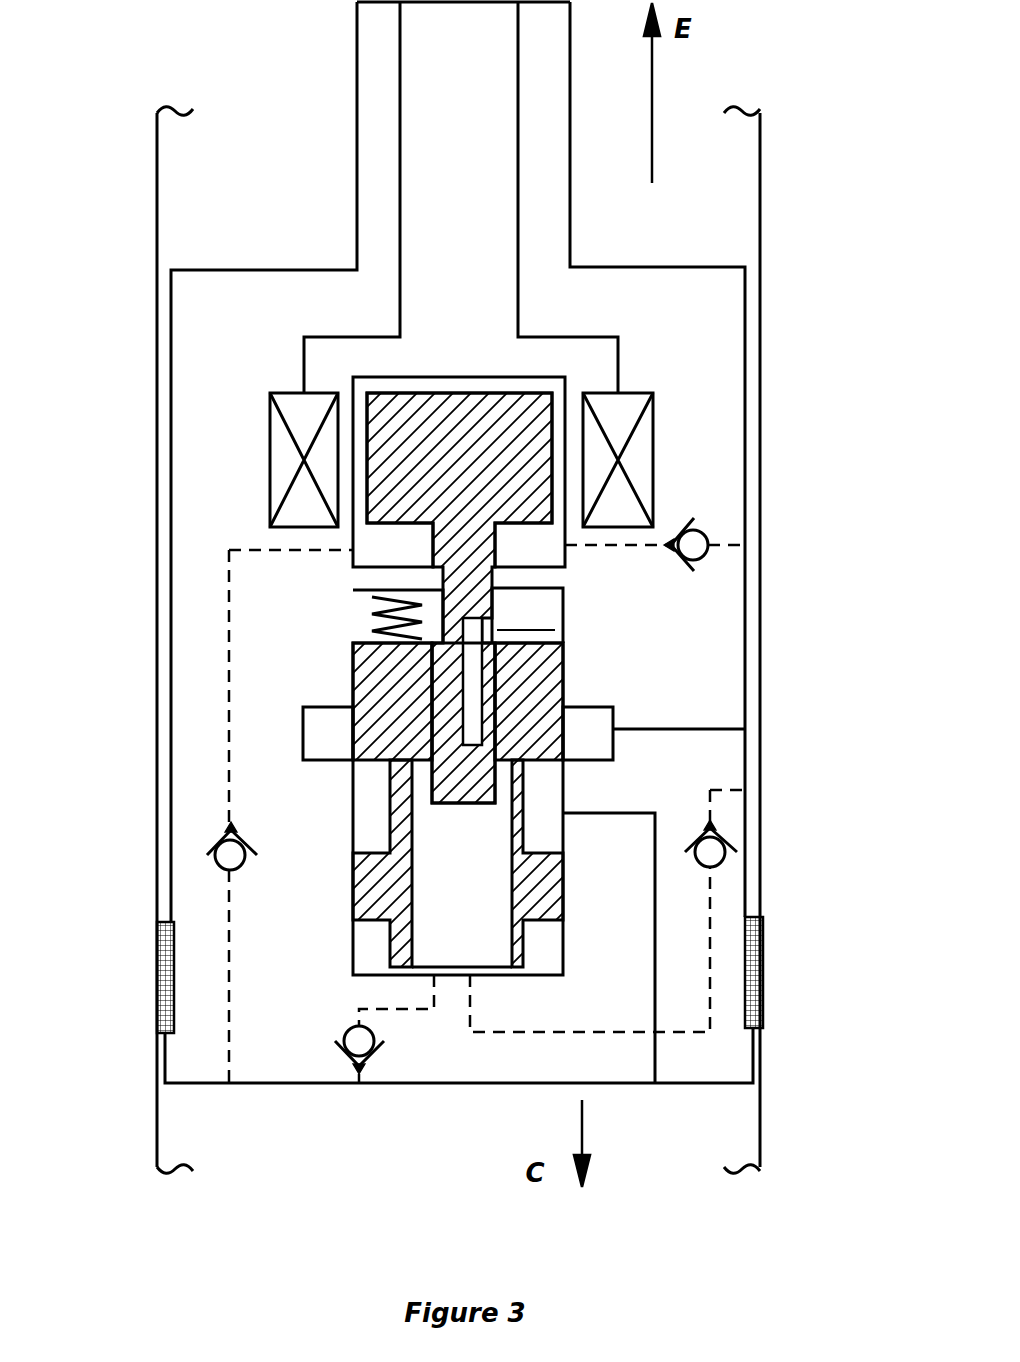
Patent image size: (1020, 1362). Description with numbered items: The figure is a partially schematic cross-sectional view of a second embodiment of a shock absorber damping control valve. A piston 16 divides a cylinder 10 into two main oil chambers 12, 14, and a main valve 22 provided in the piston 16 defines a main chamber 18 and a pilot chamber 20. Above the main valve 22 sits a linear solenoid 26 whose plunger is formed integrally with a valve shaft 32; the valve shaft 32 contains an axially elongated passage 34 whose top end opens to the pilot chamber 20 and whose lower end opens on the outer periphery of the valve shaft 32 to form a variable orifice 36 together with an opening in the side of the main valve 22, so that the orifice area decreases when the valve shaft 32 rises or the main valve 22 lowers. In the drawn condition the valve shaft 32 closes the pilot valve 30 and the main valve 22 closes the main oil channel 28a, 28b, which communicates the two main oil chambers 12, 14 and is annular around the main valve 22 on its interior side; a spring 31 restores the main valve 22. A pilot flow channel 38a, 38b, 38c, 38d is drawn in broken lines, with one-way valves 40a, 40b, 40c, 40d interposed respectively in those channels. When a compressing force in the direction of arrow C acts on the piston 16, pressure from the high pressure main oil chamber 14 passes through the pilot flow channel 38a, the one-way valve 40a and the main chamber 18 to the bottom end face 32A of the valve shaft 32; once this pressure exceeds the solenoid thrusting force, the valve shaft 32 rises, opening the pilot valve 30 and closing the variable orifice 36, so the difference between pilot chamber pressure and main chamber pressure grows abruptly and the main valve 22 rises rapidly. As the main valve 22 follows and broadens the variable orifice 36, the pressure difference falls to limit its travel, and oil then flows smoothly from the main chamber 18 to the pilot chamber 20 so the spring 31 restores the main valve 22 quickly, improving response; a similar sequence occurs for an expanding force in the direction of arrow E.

The cylinder 10 is at (758, 198).
The main oil chamber 12 is at (243, 191).
The main oil chamber 14 is at (265, 1225).
The piston 16 is at (745, 291).
The main chamber 18 is at (497, 944).
The pilot chamber 20 is at (545, 612).
The main valve 22 is at (520, 975).
The linear solenoid 26 is at (487, 378).
The main oil channel 28a is at (678, 730).
The main oil channel 28b is at (655, 1052).
The pilot valve 30 is at (420, 559).
The spring 31 is at (355, 622).
The valve shaft 32 is at (430, 765).
The bottom end face 32A is at (455, 805).
The passage 34 is at (482, 727).
The variable orifice 36 is at (490, 757).
The pilot flow channel 38a is at (412, 1010).
The pilot flow channel 38b is at (732, 547).
The pilot flow channel 38c is at (710, 890).
The pilot flow channel 38d is at (230, 891).
The one-way valve 40a is at (360, 1055).
The one-way valve 40b is at (698, 533).
The one-way valve 40c is at (712, 850).
The one-way valve 40d is at (232, 852).